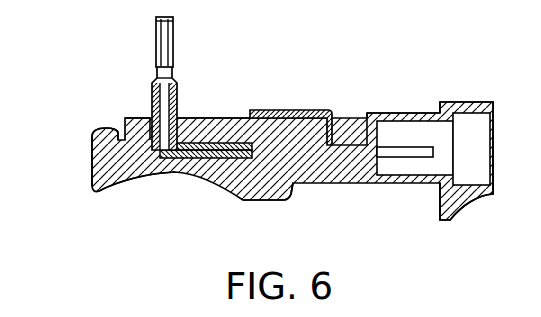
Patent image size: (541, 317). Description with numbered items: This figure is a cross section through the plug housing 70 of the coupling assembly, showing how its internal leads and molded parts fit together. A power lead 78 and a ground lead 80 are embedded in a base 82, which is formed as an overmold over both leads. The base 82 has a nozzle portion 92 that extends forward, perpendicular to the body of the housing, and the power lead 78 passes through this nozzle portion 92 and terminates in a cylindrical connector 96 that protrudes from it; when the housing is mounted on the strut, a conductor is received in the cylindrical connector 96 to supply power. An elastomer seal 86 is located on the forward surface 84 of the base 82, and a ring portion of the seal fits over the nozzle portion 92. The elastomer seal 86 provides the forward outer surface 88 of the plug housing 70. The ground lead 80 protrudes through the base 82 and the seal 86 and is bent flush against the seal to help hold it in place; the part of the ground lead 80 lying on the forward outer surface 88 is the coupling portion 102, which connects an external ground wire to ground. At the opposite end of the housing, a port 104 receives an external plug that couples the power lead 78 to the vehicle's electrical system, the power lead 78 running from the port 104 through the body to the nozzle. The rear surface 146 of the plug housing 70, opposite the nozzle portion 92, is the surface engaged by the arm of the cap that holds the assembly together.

The plug housing 70 is at (90, 136).
The power lead 78 is at (218, 160).
The ground lead 80 is at (323, 117).
The base 82 is at (122, 173).
The forward surface 84 is at (300, 145).
The elastomer seal 86 is at (218, 118).
The forward outer surface 88 is at (200, 118).
The nozzle portion 92 is at (152, 95).
The cylindrical connector 96 is at (156, 42).
The coupling portion 102 is at (273, 110).
The port 104 is at (463, 102).
The rear surface 146 is at (149, 178).